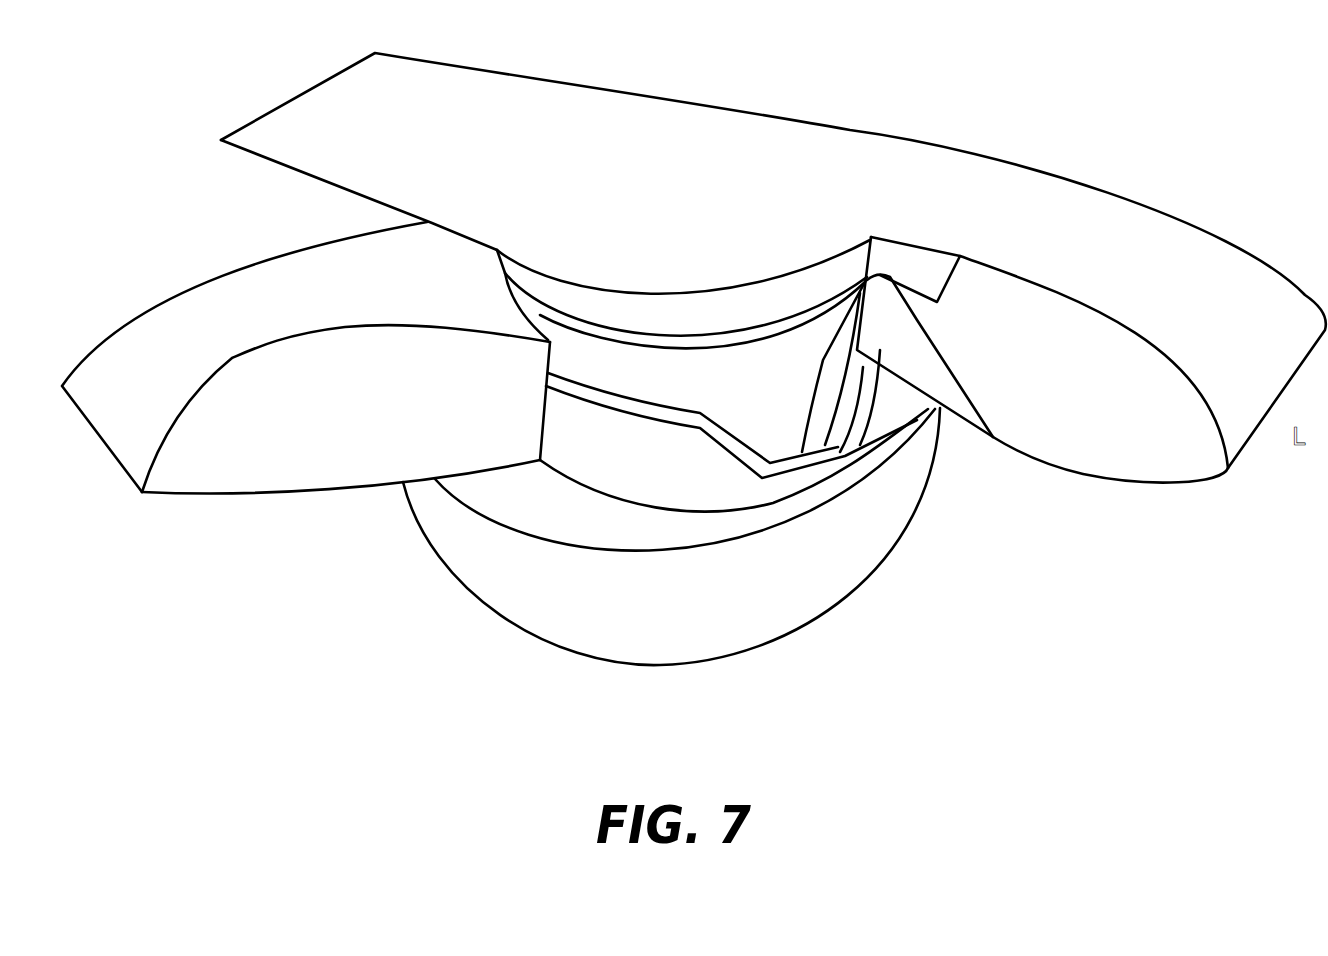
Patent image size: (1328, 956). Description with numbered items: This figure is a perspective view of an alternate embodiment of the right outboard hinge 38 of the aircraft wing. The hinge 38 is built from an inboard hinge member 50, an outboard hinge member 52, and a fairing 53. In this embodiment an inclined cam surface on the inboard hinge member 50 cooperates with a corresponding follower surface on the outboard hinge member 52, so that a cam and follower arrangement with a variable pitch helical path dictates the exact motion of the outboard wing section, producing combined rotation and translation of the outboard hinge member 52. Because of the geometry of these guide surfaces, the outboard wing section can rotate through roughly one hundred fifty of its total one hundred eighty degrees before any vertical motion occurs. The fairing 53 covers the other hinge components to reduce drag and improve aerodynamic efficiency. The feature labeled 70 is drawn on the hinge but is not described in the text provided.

The hinge 38 is at (723, 48).
The inboard hinge member 50 is at (990, 177).
The outboard hinge member 52 is at (192, 312).
The fairing 53 is at (870, 563).
The slot 70 is at (818, 372).